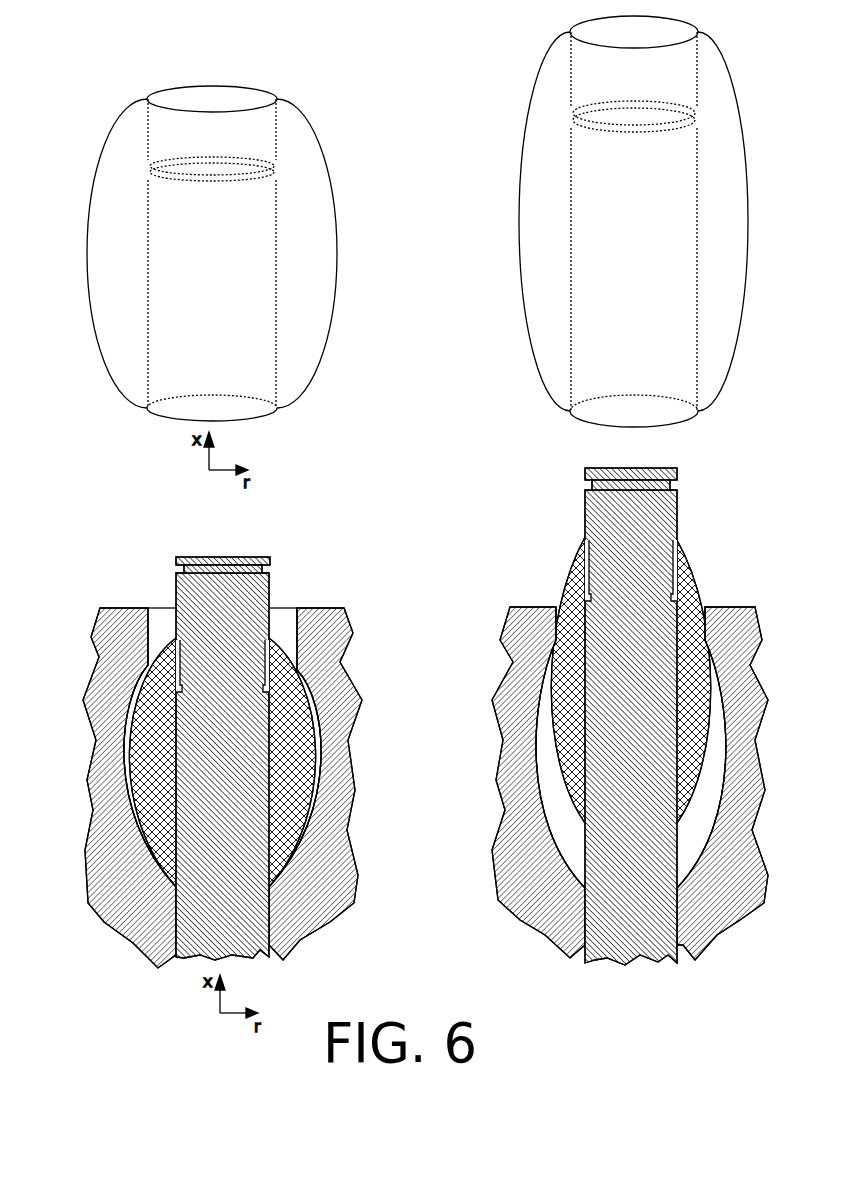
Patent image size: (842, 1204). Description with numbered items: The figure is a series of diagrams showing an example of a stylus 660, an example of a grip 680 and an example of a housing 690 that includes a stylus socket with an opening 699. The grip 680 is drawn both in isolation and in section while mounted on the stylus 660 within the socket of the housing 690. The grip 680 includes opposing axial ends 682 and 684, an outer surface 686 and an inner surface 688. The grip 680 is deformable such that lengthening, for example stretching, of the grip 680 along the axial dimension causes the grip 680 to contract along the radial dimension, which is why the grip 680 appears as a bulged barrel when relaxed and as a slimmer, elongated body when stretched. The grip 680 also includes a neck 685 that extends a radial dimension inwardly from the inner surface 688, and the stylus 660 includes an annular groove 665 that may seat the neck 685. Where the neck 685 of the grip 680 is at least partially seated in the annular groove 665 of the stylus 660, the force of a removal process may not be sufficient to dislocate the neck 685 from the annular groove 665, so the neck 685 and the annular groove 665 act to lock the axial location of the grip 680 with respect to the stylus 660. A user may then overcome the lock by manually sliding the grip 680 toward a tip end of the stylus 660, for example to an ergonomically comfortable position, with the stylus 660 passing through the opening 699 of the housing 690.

The stylus 660 is at (245, 557).
The annular groove 665 is at (266, 688).
The grip 680 is at (398, 447).
The axial end 682 is at (150, 101).
The axial end 684 is at (150, 412).
The neck 685 is at (252, 183).
The outer surface 686 is at (117, 165).
The inner surface 688 is at (250, 99).
The housing 690 is at (349, 620).
The opening 699 is at (146, 607).